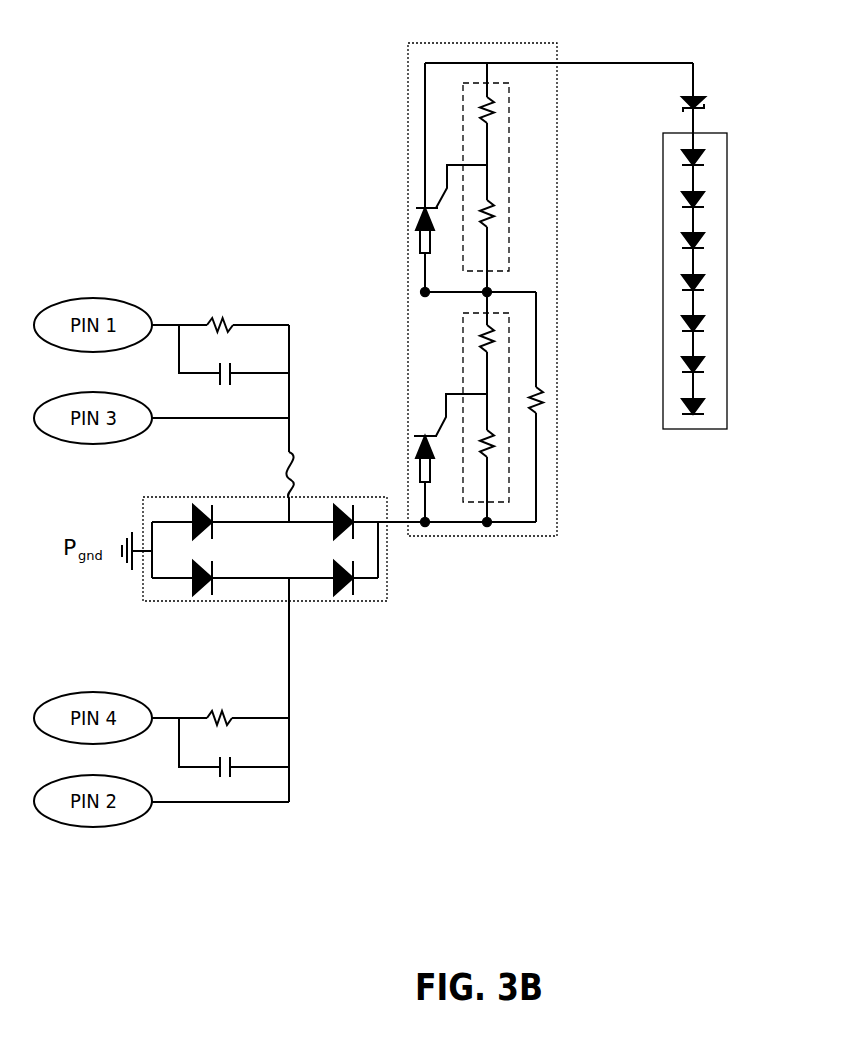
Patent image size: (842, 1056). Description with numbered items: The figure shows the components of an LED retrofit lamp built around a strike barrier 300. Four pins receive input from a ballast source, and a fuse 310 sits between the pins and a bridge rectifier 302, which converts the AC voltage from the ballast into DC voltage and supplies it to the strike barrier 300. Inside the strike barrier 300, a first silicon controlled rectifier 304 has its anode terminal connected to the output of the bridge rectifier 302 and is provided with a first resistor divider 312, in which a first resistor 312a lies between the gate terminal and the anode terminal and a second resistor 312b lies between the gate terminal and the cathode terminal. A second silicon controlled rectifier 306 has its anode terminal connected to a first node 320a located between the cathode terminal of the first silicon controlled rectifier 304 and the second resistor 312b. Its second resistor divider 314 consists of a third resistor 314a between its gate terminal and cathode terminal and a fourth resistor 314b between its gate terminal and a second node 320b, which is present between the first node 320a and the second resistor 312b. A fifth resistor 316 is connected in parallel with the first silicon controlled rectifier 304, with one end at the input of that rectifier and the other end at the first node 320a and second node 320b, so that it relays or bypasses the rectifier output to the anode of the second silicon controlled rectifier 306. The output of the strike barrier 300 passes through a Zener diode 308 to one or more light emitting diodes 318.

The strike barrier 300 is at (570, 547).
The bridge rectifier 302 is at (317, 602).
The first silicon controlled rectifier 304 is at (416, 475).
The second silicon controlled rectifier 306 is at (418, 242).
The Zener diode 308 is at (708, 99).
The fuse 310 is at (283, 472).
The first resistor divider 312 is at (487, 411).
The first resistor 312a is at (497, 443).
The second resistor 312b is at (476, 337).
The second resistor divider 314 is at (540, 177).
The third resistor 314a is at (492, 122).
The fourth resistor 314b is at (497, 223).
The fifth resistor 316 is at (545, 410).
The light emitting diodes 318 is at (730, 258).
The first node 320a is at (421, 293).
The second node 320b is at (490, 291).